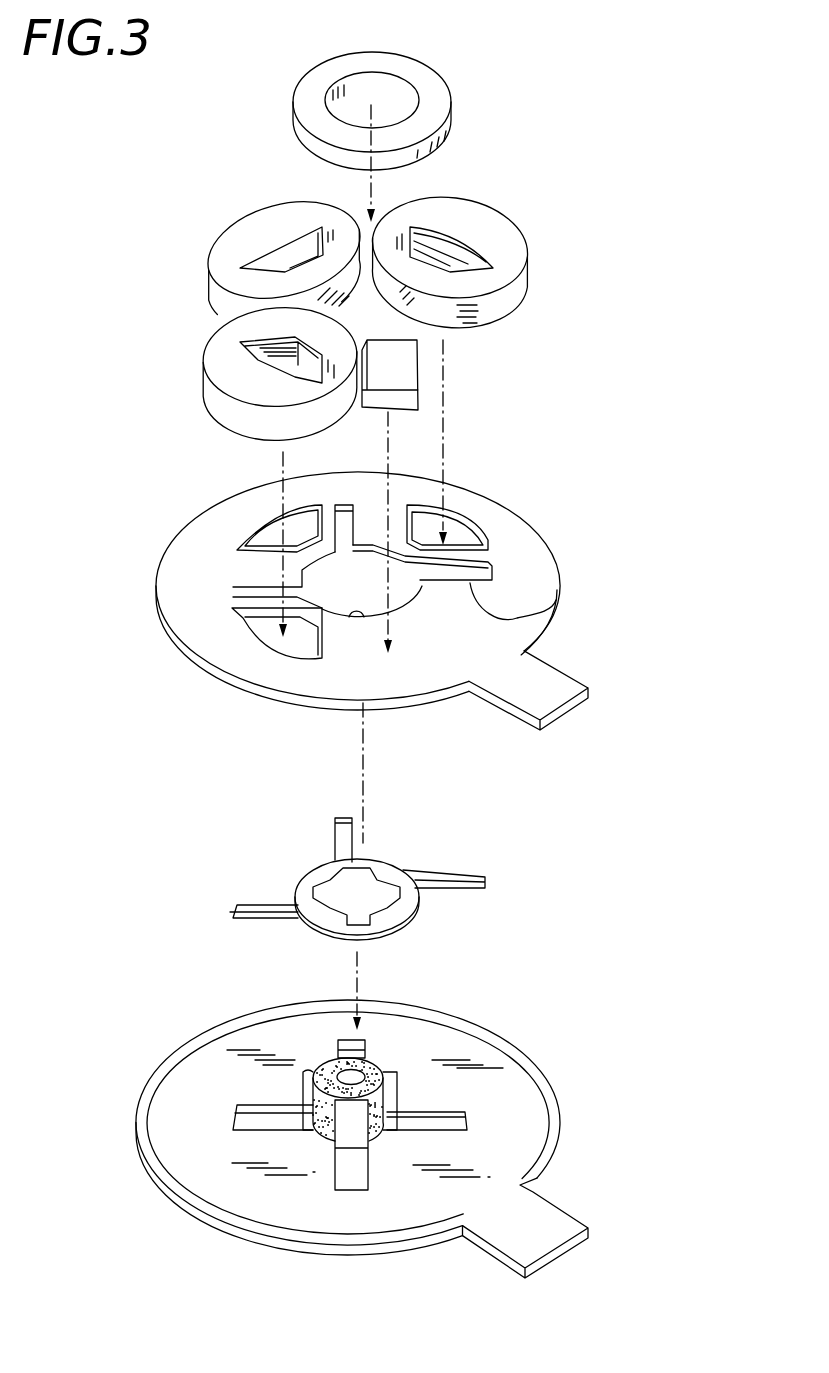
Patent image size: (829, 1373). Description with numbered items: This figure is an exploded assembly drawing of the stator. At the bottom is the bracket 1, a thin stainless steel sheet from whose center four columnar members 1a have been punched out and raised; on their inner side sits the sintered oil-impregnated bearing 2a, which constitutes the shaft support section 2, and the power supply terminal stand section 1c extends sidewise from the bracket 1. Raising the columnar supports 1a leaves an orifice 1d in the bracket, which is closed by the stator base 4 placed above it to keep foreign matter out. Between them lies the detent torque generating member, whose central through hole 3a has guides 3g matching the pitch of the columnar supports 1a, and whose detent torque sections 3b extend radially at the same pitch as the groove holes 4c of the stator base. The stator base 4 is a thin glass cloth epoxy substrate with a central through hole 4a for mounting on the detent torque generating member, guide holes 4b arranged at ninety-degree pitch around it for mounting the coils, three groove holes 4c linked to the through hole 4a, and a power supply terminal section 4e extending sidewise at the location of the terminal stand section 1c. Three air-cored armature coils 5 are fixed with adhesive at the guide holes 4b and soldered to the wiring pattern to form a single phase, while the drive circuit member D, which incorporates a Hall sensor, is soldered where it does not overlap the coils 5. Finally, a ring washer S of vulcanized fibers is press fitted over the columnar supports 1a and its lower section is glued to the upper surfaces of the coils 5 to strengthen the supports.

The ring washer S is at (437, 87).
The air-cored armature coil 5 is at (253, 230).
The drive circuit member D is at (407, 377).
The stator base 4 is at (399, 611).
The through hole 4a is at (350, 613).
The guide holes 4b is at (457, 542).
The groove holes 4c is at (343, 498).
The power supply terminal section 4e is at (548, 703).
The through hole 3a is at (360, 898).
The detent torque sections 3b is at (463, 870).
The guides 3g is at (298, 895).
The bracket 1 is at (384, 1146).
The columnar members 1a is at (340, 1037).
The power supply terminal stand section 1c is at (487, 1232).
The orifice 1d is at (368, 1035).
The shaft support section 2 is at (263, 1041).
The sintered oil-impregnated bearing 2a is at (327, 1067).